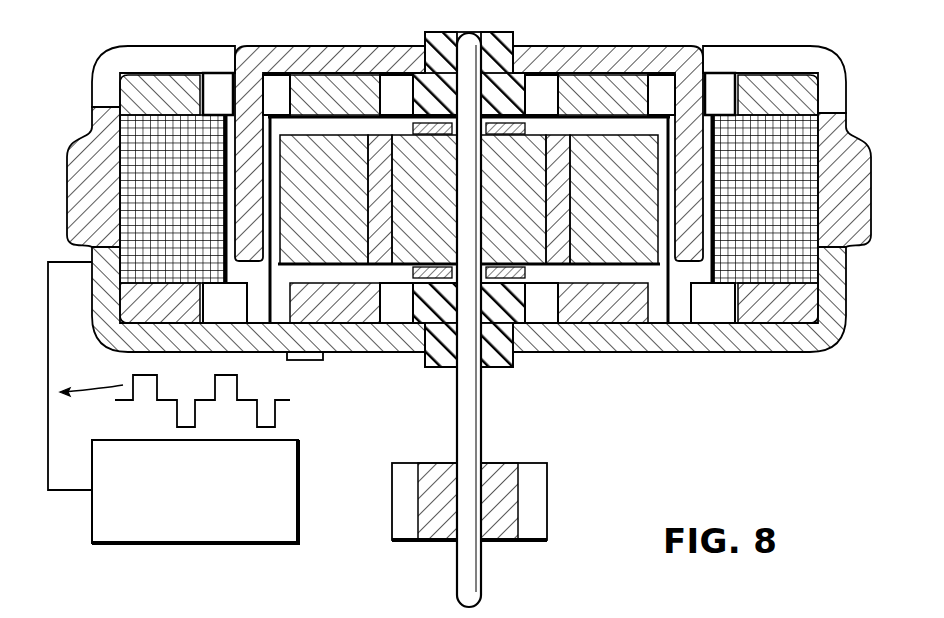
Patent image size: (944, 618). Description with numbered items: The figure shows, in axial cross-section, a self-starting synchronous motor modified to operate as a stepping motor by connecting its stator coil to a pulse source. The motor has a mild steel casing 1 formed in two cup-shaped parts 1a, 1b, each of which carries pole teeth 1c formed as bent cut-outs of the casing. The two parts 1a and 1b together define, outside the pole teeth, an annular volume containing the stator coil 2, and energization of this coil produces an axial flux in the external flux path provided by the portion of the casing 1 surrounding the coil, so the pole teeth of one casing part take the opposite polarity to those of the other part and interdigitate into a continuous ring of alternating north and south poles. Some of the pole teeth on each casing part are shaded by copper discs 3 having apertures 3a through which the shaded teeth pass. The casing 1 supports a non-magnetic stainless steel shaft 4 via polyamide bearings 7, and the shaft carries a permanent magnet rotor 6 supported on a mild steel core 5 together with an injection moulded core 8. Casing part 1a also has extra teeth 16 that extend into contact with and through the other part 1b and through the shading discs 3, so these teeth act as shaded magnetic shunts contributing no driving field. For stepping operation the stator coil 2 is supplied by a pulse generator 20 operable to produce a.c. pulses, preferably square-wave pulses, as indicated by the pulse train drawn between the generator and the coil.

The casing 1 is at (778, 58).
The casing part 1a is at (860, 153).
The casing part 1b is at (840, 333).
The pole teeth 1c is at (240, 97).
The stator coil 2 is at (803, 247).
The copper disc 3 is at (158, 78).
The aperture 3a is at (278, 92).
The shaft 4 is at (463, 573).
The mild steel core 5 is at (372, 184).
The permanent magnet rotor 6 is at (618, 255).
The bearing 7 is at (492, 40).
The injection moulded core 8 is at (527, 153).
The extra tooth 16 is at (303, 360).
The pulse generator 20 is at (202, 533).